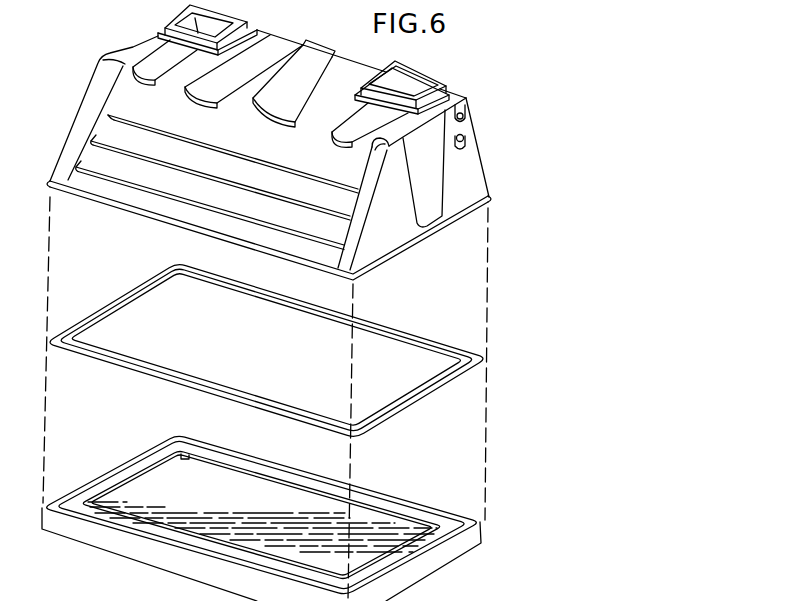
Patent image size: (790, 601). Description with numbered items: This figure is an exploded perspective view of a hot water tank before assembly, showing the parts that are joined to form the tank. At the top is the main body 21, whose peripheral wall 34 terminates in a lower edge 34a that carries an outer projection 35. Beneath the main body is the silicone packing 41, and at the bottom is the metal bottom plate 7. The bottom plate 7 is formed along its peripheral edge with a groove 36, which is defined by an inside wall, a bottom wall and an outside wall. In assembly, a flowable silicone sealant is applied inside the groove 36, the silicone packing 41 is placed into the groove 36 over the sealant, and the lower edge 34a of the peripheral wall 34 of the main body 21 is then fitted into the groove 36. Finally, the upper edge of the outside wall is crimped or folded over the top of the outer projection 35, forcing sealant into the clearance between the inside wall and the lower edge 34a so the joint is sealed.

The peripheral wall 34 is at (92, 95).
The lower edge of peripheral wall 34a is at (133, 211).
The outer projection 35 is at (94, 202).
The main body 21 is at (463, 160).
The silicone packing 41 is at (480, 358).
The groove 36 is at (115, 465).
The metal bottom plate 7 is at (413, 577).